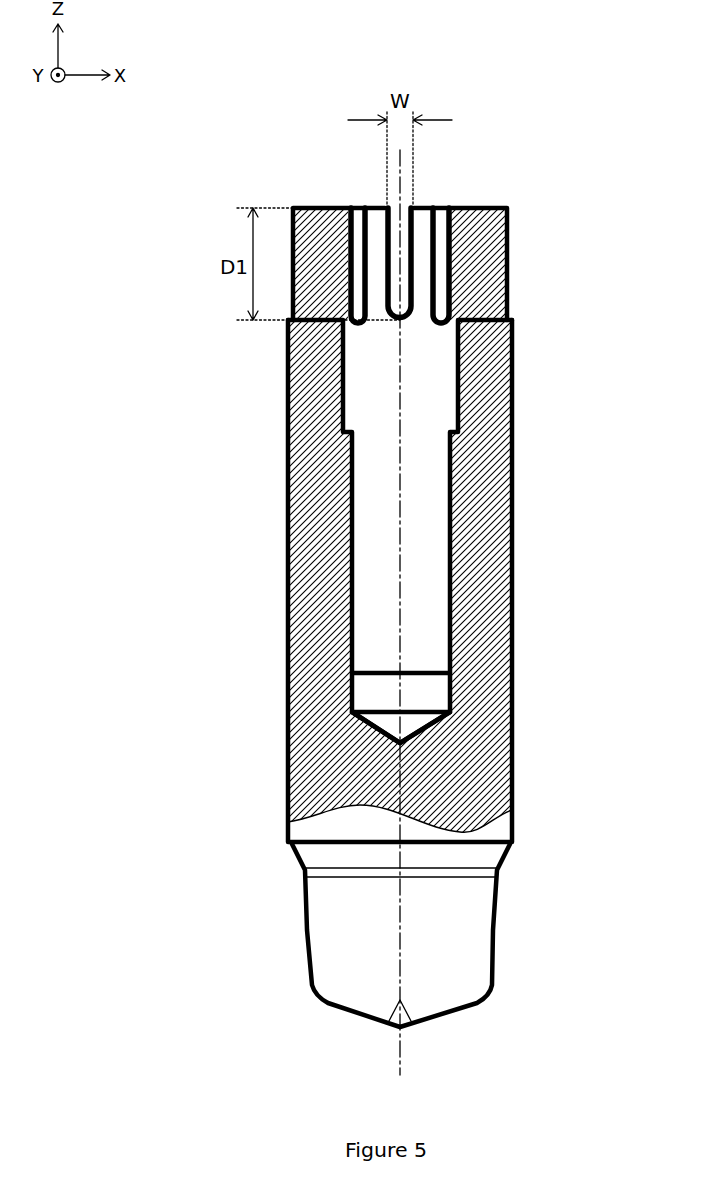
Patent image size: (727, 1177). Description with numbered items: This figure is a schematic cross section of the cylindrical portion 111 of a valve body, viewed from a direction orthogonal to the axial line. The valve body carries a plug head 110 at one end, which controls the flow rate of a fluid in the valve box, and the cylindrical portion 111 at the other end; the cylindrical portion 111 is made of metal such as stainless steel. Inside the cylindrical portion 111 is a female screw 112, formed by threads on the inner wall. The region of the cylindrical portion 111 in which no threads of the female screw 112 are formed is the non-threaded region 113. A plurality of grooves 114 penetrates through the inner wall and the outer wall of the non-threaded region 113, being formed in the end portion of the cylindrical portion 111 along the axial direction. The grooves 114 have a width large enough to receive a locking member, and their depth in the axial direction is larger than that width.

The plug head 110 is at (485, 916).
The cylindrical portion 111 is at (512, 840).
The female screw 112 is at (446, 690).
The non-threaded region 113 is at (508, 233).
The grooves 114 is at (402, 301).